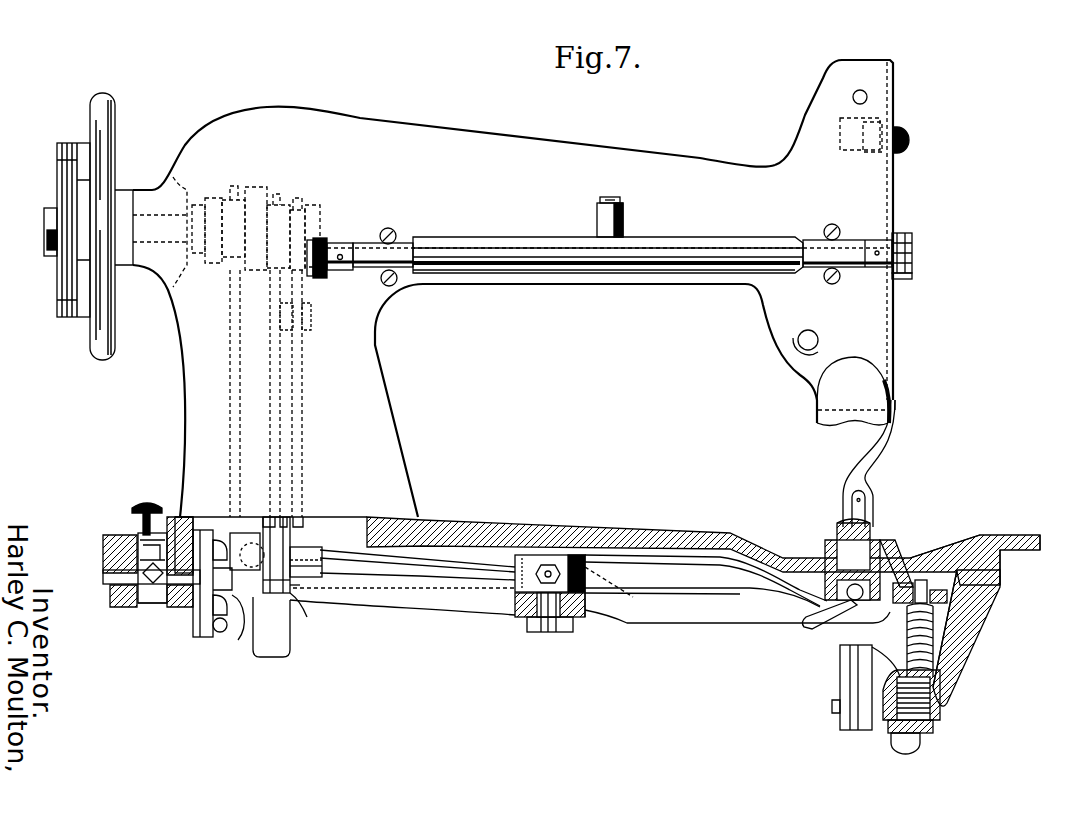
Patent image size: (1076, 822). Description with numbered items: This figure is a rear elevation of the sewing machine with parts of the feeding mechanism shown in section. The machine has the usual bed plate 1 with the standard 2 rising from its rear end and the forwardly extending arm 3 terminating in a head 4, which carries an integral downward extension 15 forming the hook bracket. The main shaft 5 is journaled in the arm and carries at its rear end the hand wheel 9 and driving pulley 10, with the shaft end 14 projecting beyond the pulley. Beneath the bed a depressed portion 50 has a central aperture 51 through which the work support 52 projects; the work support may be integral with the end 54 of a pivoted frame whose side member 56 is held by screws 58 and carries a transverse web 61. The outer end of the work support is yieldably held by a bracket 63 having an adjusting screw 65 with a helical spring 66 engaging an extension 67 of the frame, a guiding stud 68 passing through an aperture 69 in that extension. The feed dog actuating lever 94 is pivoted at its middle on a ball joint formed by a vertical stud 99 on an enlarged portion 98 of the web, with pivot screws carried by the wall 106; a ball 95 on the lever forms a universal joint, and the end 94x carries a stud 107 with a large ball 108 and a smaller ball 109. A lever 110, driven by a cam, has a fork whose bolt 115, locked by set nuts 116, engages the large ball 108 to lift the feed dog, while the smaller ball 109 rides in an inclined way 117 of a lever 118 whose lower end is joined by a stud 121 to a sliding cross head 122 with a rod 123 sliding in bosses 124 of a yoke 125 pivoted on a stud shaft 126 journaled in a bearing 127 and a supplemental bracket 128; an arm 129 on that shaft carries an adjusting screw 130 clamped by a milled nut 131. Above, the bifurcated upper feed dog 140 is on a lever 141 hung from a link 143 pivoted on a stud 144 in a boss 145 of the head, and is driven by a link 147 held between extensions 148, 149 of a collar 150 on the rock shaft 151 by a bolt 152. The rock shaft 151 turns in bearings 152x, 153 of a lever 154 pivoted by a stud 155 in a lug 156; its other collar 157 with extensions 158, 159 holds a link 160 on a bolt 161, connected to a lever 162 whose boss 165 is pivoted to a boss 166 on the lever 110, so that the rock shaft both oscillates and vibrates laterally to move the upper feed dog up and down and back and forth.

The bed plate 1 is at (598, 532).
The standard 2 is at (392, 447).
The arm 3 is at (553, 148).
The head 4 is at (877, 177).
The main shaft 5 is at (320, 222).
The hand wheel 9 is at (113, 350).
The driving pulley 10 is at (60, 310).
The shaft end 14 is at (44, 252).
The downward extension 15 is at (825, 414).
The depressed portion 50 is at (925, 553).
The central aperture 51 is at (897, 555).
The work support 52 is at (825, 546).
The end of frame 54 is at (900, 603).
The frame 56 is at (733, 618).
The screws 58 is at (878, 522).
The transverse web 61 is at (587, 615).
The bracket 63 is at (968, 640).
The adjusting screw 65 is at (940, 705).
The helical spring 66 is at (933, 657).
The extension 67 is at (947, 596).
The guiding stud 68 is at (940, 628).
The aperture 69 is at (995, 566).
The lever 94 is at (667, 570).
The end of lever 94x is at (340, 553).
The ball 95 is at (848, 606).
The enlarged portion 98 is at (518, 617).
The vertical stud 99 is at (547, 620).
The wall 106 is at (515, 553).
The stud 107 is at (308, 556).
The large ball 108 is at (294, 563).
The smaller ball 109 is at (278, 520).
The lever 110 is at (270, 410).
The bolt 115 is at (290, 600).
The set nuts 116 is at (293, 590).
The inclined way 117 is at (233, 533).
The lever 118 is at (232, 398).
The stud 121 is at (253, 603).
The sliding cross head 122 is at (229, 633).
The rod 123 is at (212, 606).
The bosses 124 is at (206, 545).
The yoke 125 is at (195, 598).
The stud shaft 126 is at (118, 579).
The bearing 127 is at (160, 603).
The supplemental bracket 128 is at (108, 553).
The arm 129 is at (128, 573).
The adjusting screw 130 is at (138, 532).
The milled nut 131 is at (147, 505).
The upper feed dog 140 is at (843, 506).
The lever 141 is at (898, 384).
The link 143 is at (872, 128).
The stud 144 is at (907, 137).
The boss 145 is at (842, 120).
The link 147 is at (912, 250).
The extension 148 is at (912, 240).
The extension 149 is at (912, 260).
The collar 150 is at (878, 268).
The rock shaft 151 is at (710, 258).
The bolt 152 is at (912, 276).
The bearing 152x is at (818, 270).
The bearing 153 is at (373, 270).
The lever 154 is at (543, 236).
The stud 155 is at (620, 197).
The lug 156 is at (624, 215).
The collar 157 is at (372, 238).
The extension 158 is at (327, 243).
The extension 159 is at (327, 273).
The link 160 is at (328, 250).
The bolt 161 is at (318, 278).
The lever 162 is at (302, 408).
The boss 165 is at (311, 325).
The boss 166 is at (280, 316).